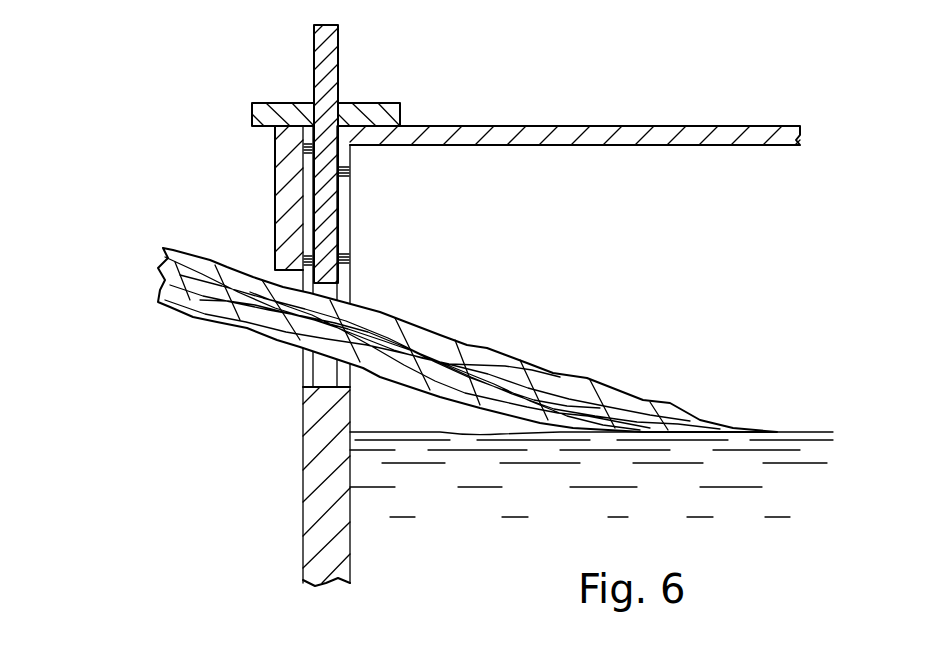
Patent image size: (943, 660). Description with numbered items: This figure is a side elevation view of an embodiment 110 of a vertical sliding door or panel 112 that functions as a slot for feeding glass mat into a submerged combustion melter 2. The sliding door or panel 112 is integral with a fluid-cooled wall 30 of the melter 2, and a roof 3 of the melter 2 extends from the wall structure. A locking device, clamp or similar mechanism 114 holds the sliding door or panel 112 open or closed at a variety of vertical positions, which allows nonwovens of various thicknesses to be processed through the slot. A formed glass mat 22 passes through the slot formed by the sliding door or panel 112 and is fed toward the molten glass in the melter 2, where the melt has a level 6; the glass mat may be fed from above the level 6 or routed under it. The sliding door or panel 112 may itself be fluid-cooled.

The embodiment 110 is at (153, 119).
The vertical sliding door or panel 112 is at (314, 52).
The locking device, clamp or similar mechanism 114 is at (373, 103).
The roof 3 is at (598, 126).
The fluid-cooled wall 30 is at (275, 180).
The melter 2 is at (303, 483).
The formed glass mat 22 is at (510, 352).
The level 6 is at (803, 432).